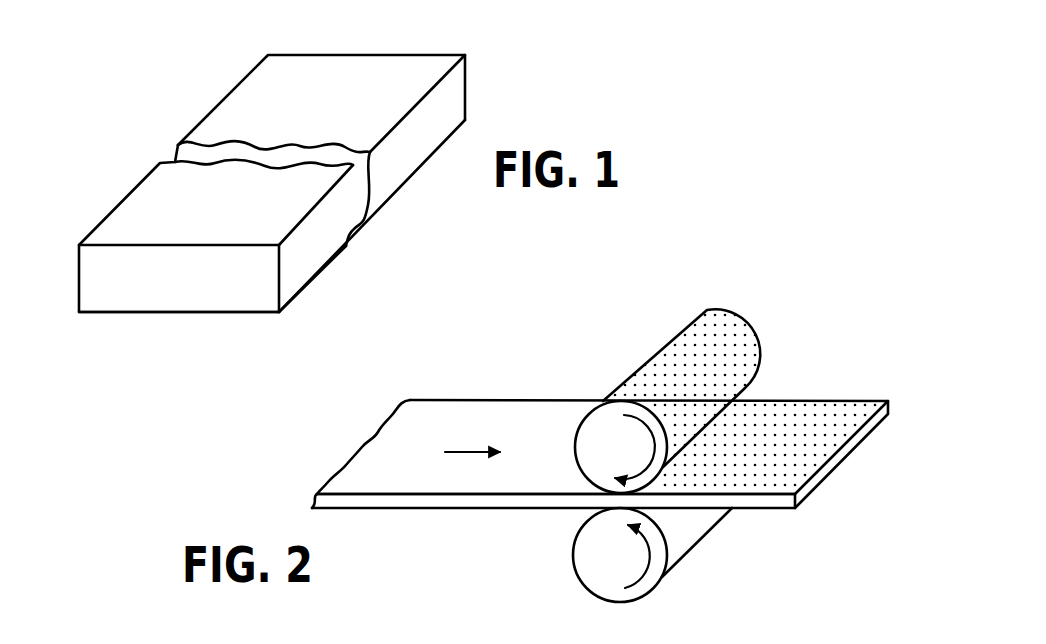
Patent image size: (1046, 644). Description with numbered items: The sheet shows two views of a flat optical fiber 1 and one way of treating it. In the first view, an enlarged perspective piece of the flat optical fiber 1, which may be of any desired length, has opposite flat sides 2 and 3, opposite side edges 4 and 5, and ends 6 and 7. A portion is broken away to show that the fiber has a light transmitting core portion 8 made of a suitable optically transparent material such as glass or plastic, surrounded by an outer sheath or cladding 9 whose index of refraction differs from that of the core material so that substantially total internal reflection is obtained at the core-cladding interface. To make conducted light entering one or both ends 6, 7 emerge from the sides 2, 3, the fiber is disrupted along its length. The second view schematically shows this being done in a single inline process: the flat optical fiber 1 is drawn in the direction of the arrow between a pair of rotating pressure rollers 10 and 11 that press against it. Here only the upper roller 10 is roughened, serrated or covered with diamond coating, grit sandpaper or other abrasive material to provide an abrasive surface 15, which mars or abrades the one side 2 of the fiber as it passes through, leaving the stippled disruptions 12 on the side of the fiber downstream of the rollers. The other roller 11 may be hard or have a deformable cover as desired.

In FIG. 1, the flat optical fiber 1 is at (293, 186).
In FIG. 2, the flat optical fiber 1 is at (600, 411).
In FIG. 1, the flat side 2 is at (403, 73).
In FIG. 1, the flat side 3 is at (410, 183).
In FIG. 1, the side edge 4 is at (204, 243).
In FIG. 1, the side edge 5 is at (323, 238).
In FIG. 1, the end 6 is at (230, 287).
In FIG. 1, the end 7 is at (467, 73).
In FIG. 1, the light transmitting core portion 8 is at (105, 278).
In FIG. 1, the outer sheath or cladding 9 is at (122, 245).
In FIG. 2, the pressure roller 10 is at (686, 385).
In FIG. 2, the pressure roller 11 is at (598, 547).
In FIG. 2, the disruptions 12 is at (808, 410).
In FIG. 2, the abrasive surface 15 is at (728, 338).